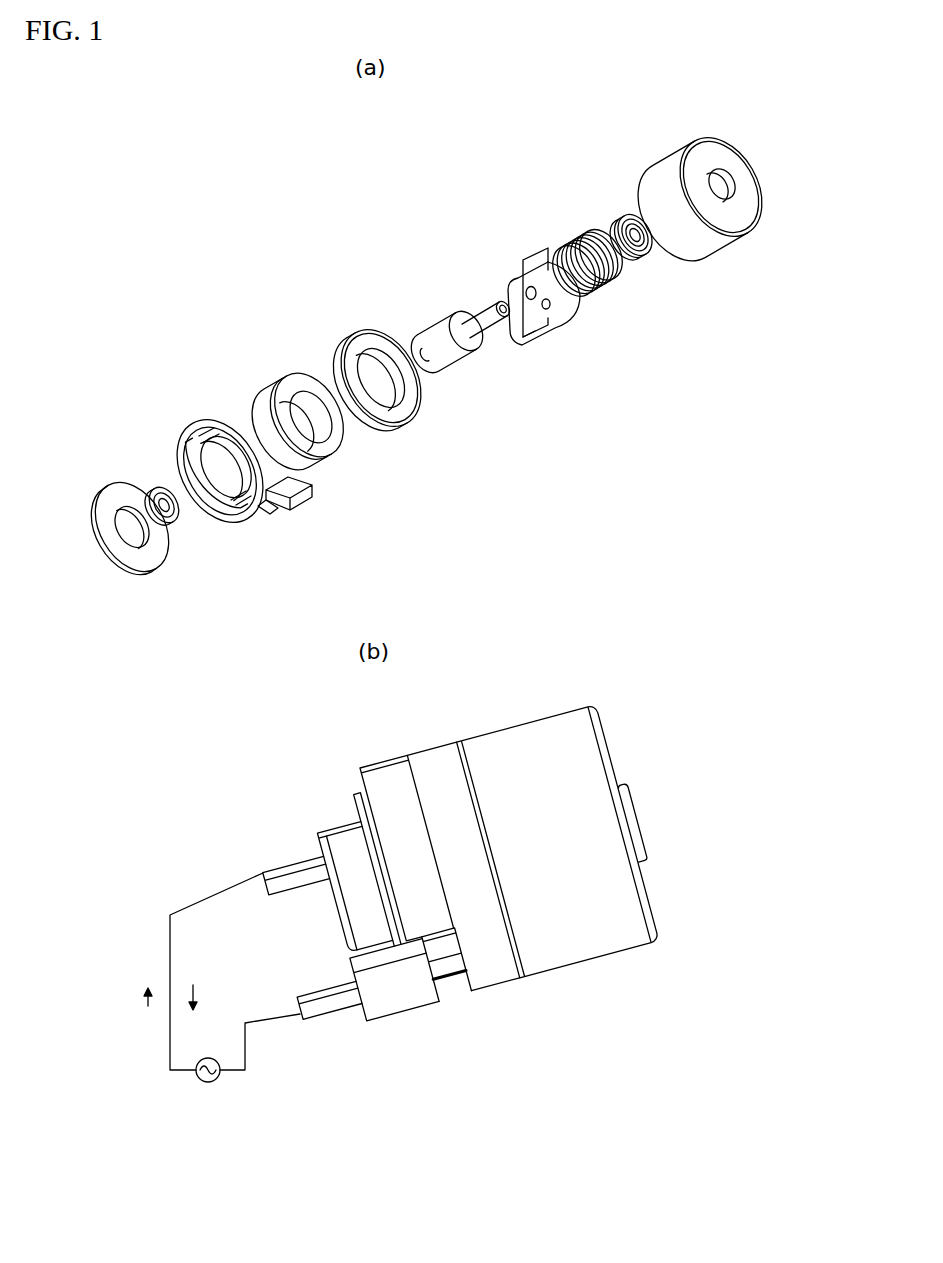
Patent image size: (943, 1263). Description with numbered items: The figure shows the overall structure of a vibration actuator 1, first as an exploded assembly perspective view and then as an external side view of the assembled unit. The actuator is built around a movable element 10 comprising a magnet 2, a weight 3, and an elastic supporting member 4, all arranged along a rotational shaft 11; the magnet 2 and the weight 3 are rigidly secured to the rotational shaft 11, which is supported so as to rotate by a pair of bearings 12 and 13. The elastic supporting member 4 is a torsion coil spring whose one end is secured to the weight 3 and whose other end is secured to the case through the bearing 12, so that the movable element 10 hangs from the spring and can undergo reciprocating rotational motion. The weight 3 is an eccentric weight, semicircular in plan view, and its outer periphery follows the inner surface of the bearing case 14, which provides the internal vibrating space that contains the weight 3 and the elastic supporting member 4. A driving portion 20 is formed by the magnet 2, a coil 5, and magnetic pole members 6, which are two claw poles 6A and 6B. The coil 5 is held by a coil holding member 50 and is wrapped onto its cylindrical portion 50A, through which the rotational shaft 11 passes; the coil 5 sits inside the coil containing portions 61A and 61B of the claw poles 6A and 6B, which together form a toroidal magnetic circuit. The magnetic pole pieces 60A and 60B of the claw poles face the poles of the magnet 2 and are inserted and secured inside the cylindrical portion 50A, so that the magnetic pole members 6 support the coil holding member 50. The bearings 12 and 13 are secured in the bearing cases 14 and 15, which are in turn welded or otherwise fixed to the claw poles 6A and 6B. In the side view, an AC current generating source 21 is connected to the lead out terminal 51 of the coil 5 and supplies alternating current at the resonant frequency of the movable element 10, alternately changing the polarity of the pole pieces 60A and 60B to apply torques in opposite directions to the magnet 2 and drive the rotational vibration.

The vibration actuator 1 is at (597, 100).
The magnet 2 is at (483, 326).
The weight 3 is at (530, 262).
The elastic supporting member 4 is at (568, 238).
The coil 5 is at (358, 678).
The magnetic pole members 6 is at (342, 662).
The claw pole 6A is at (436, 662).
The claw pole 6B is at (295, 637).
The movable element 10 is at (521, 280).
The rotational shaft 11 is at (485, 342).
The bearing 12 is at (640, 262).
The bearing 13 is at (166, 522).
The bearing case 14 is at (712, 262).
The bearing case 15 is at (120, 558).
The driving portion 20 is at (384, 619).
The AC current generating source 21 is at (222, 1074).
The coil holding member 50 is at (312, 678).
The cylindrical portion 50A is at (336, 436).
The lead out terminal 51 is at (264, 508).
The magnetic pole piece 60A is at (378, 352).
The magnetic pole piece 60B is at (254, 408).
The coil containing portion 61A is at (388, 444).
The coil containing portion 61B is at (206, 522).